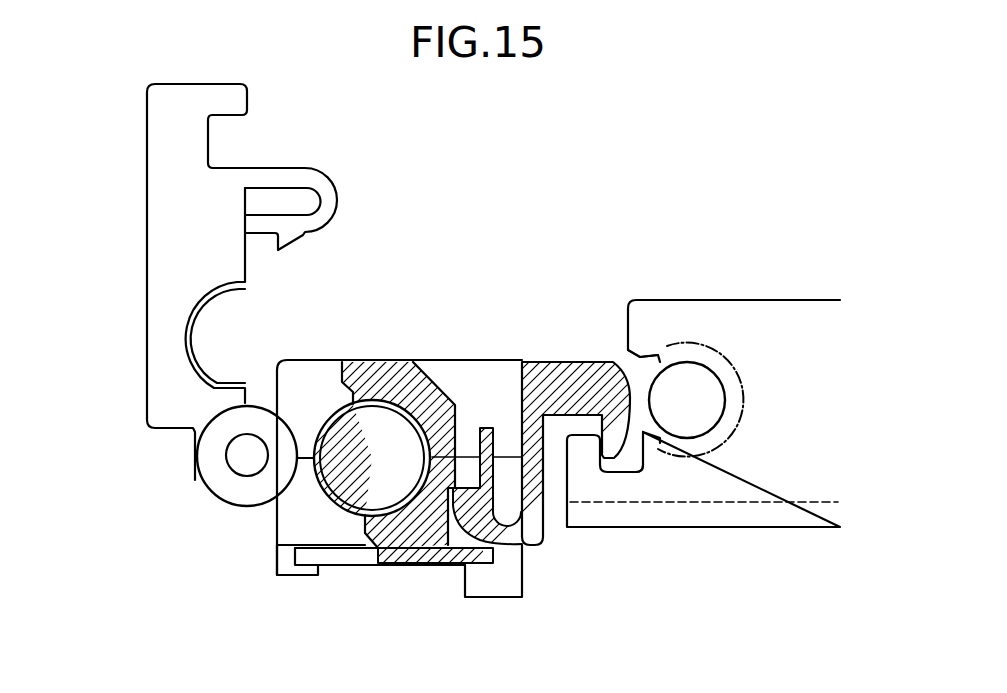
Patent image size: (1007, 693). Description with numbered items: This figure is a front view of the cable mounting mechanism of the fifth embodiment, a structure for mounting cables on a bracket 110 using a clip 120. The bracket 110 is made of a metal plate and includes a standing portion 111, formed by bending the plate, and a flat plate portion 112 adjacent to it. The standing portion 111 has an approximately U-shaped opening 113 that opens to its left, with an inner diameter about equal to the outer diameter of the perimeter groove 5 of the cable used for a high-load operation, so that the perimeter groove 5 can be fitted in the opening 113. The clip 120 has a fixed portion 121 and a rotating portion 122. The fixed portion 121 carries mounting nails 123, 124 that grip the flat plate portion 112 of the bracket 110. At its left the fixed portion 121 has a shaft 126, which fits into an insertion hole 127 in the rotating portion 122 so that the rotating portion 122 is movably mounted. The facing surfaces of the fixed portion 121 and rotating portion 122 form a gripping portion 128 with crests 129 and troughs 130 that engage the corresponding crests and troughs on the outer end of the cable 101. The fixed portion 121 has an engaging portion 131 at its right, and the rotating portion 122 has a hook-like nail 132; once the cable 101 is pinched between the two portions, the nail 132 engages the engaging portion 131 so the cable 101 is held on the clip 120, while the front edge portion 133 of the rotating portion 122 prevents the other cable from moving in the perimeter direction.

The perimeter groove 5 is at (640, 372).
The cable 101 is at (389, 523).
The bracket 110 is at (860, 478).
The standing portion 111 is at (805, 298).
The flat plate portion 112 is at (345, 560).
The opening 113 is at (712, 380).
The clip 120 is at (250, 533).
The fixed portion 121 is at (310, 532).
The rotating portion 122 is at (147, 190).
The mounting nail 123 is at (285, 565).
The mounting nail 124 is at (496, 592).
The shaft 126 is at (250, 458).
The insertion hole 127 is at (236, 447).
The gripping portion 128 is at (358, 419).
The crests 129 is at (342, 425).
The troughs 130 is at (312, 447).
The engaging portion 131 is at (465, 492).
The nail 132 is at (480, 493).
The front edge portion 133 is at (643, 440).